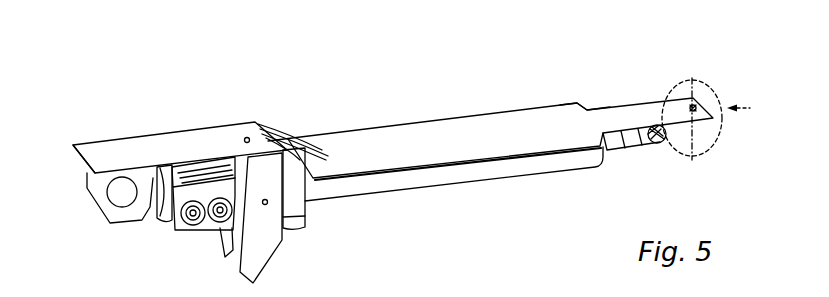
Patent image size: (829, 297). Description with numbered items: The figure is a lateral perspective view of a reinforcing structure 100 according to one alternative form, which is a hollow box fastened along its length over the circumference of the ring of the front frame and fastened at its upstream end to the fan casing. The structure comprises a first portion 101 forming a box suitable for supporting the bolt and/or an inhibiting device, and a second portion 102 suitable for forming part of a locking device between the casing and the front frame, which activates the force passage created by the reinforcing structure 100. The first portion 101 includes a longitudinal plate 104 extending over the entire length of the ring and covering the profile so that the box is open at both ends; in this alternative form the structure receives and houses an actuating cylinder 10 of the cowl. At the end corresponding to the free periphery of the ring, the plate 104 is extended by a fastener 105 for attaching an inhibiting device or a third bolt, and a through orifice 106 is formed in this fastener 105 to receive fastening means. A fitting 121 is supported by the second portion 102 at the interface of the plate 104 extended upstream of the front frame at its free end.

The actuating cylinder 10 is at (478, 167).
The reinforcing structure 100 is at (449, 85).
The first portion 101 is at (341, 125).
The second portion 102 is at (116, 128).
The longitudinal plate 104 is at (525, 130).
The fastener 105 is at (632, 112).
The through orifice 106 is at (702, 79).
The fitting 121 is at (113, 212).